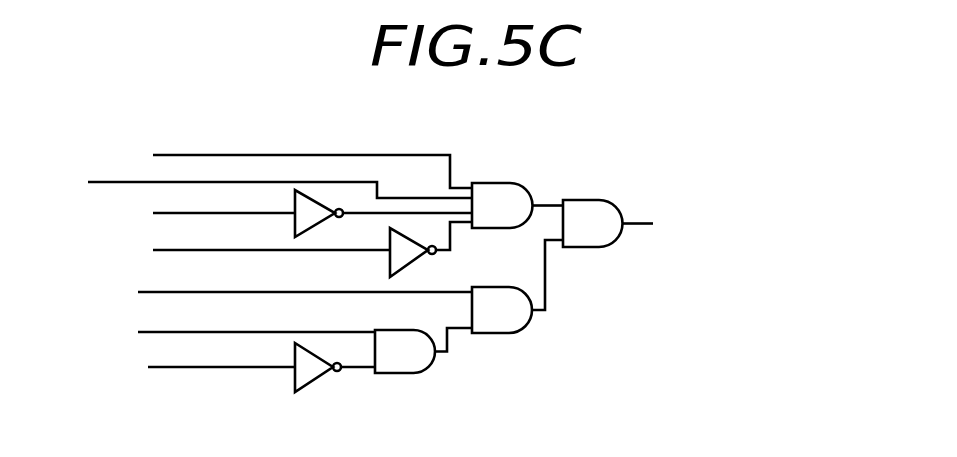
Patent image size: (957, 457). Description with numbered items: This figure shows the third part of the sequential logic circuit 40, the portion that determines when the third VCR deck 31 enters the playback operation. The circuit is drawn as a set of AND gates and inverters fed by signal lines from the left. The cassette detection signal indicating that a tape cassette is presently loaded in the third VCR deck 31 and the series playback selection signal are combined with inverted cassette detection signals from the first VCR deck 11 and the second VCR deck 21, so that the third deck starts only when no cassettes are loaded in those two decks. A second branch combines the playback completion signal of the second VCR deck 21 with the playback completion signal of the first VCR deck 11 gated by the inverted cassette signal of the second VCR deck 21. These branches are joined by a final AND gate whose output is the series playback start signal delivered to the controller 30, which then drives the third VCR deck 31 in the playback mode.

The sequential logic circuit 40 is at (600, 141).
The controller 30 is at (729, 267).
The third VCR deck 31 is at (259, 163).
The first VCR deck 11 is at (259, 291).
The second VCR deck 21 is at (259, 268).